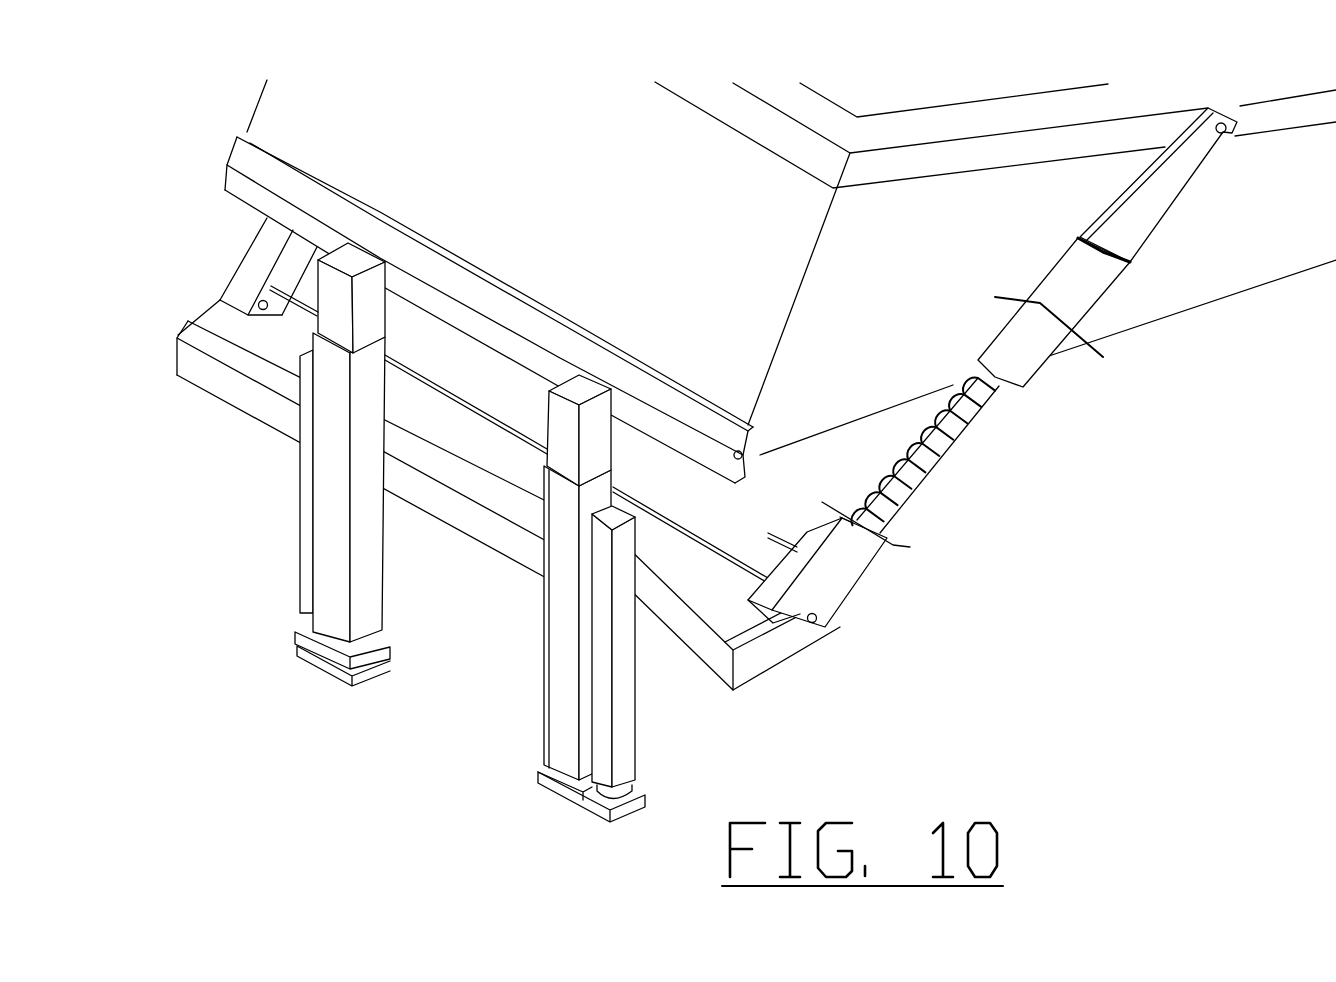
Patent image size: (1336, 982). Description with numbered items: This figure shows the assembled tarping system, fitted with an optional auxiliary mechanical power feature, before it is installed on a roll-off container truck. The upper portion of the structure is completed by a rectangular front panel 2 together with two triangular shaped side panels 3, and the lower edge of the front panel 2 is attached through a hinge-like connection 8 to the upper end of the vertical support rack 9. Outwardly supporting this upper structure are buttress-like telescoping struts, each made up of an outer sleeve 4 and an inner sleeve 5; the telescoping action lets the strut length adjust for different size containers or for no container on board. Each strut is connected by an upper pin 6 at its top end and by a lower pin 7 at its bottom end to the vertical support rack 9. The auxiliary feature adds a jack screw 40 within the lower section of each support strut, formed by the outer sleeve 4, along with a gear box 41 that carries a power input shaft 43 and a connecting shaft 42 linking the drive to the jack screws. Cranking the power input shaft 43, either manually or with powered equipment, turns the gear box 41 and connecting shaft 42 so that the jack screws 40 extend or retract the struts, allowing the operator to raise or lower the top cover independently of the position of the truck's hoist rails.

The front panel 2 is at (600, 215).
The side panel 3 is at (832, 323).
The outer sleeve 4 is at (250, 270).
The inner sleeve 5 is at (1045, 362).
The upper pin 6 is at (1223, 142).
The lower pin 7 is at (830, 636).
The hinge-like connection 8 is at (223, 177).
The vertical support rack 9 is at (312, 561).
The jack screw 40 is at (950, 450).
The gear box 41 is at (810, 528).
The connecting shaft 42 is at (297, 317).
The power input shaft 43 is at (768, 525).